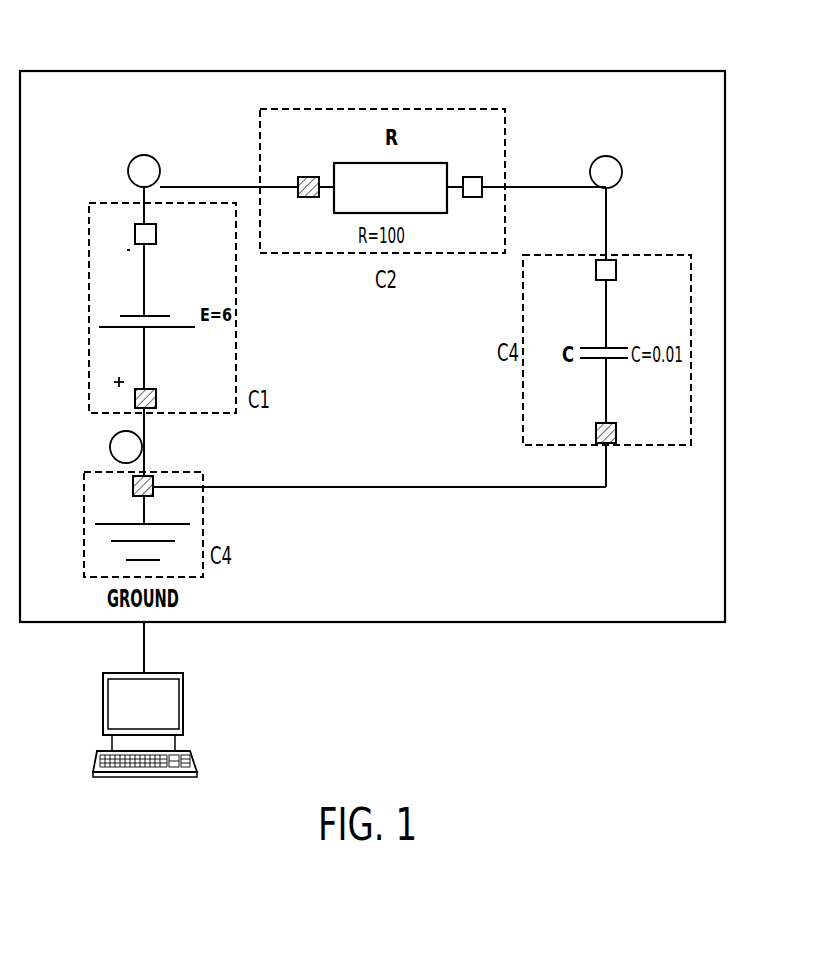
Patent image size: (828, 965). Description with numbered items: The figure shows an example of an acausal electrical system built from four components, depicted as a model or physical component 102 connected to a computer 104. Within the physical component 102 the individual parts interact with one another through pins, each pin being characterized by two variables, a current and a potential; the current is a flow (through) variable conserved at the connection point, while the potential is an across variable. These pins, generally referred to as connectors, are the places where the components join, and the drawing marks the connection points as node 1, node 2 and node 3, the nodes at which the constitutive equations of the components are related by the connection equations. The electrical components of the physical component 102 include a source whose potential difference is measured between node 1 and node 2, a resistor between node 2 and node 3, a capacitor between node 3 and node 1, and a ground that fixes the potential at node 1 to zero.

The physical component 102 is at (135, 71).
The computer 104 is at (183, 700).
The node 1 is at (126, 447).
The node 2 is at (144, 171).
The node 3 is at (606, 172).